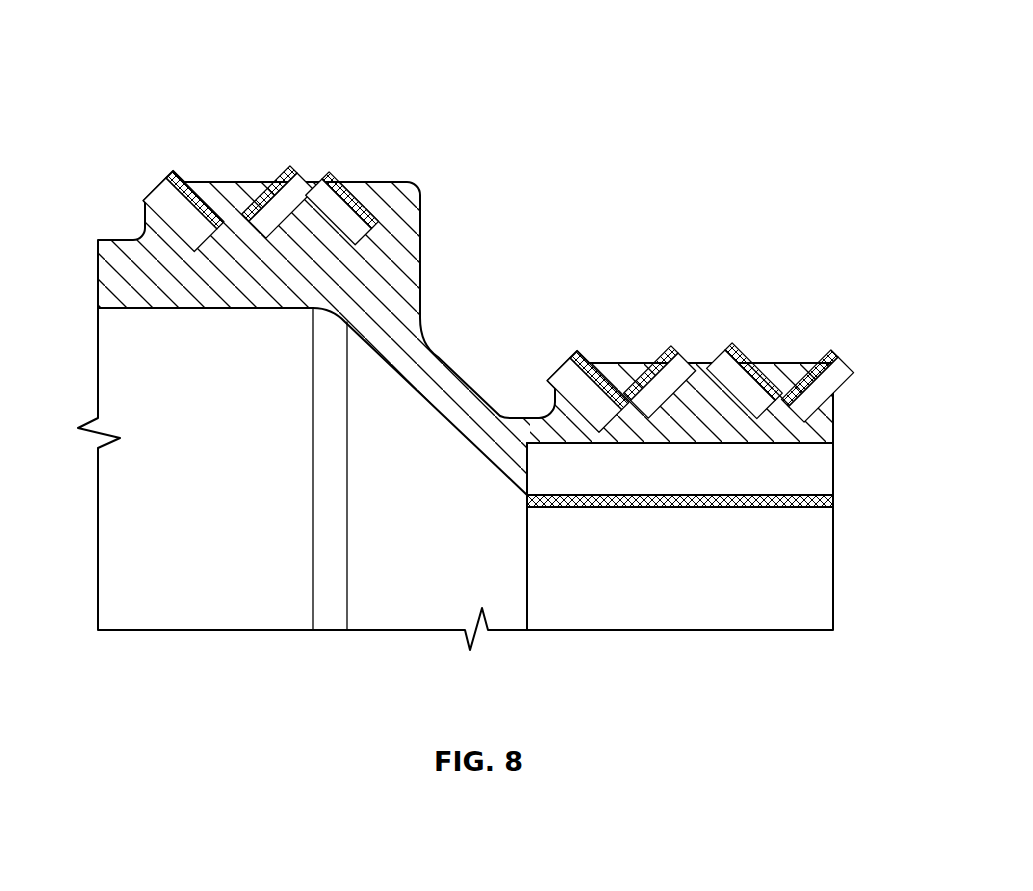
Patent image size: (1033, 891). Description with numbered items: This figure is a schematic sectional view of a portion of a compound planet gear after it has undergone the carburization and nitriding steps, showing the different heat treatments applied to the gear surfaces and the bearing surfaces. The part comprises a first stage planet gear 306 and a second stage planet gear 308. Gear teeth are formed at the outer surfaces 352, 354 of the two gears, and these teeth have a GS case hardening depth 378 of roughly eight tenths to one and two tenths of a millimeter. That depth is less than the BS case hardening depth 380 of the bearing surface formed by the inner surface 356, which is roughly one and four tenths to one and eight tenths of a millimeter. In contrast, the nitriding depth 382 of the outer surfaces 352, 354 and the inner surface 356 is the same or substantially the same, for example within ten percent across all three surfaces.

The first stage planet gear 306 is at (205, 74).
The second stage planet gear 308 is at (800, 219).
The outer surface 352 is at (324, 165).
The outer surface 354 is at (633, 345).
The inner surface 356 is at (652, 514).
The GS case hardening depth 378 is at (838, 357).
The BS case hardening depth 380 is at (837, 443).
The nitriding depth 382 is at (166, 178).